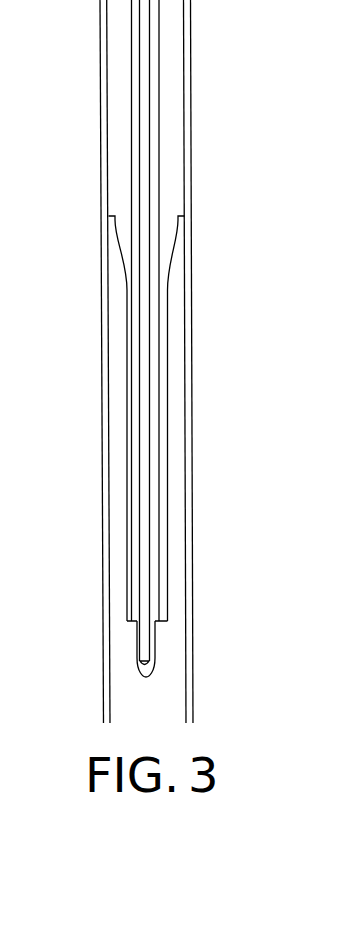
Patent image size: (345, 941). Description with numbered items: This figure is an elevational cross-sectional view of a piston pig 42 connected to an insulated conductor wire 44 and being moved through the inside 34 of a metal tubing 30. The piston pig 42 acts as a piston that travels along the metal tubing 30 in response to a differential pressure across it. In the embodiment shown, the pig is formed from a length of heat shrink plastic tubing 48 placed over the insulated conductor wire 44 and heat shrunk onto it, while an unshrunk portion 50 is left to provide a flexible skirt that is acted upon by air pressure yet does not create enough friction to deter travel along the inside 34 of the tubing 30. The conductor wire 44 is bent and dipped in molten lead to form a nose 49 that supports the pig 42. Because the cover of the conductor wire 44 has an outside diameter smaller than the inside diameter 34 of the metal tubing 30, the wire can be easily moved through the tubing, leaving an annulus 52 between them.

The metal tubing 30 is at (190, 80).
The inside of the tubing 34 is at (102, 143).
The annulus 52 is at (172, 42).
The conductor wire 44 is at (153, 160).
The heat shrink plastic tubing 48 is at (155, 470).
The unshrunk portion 50 is at (178, 220).
The piston pig 42 is at (168, 362).
The nose 49 is at (148, 652).